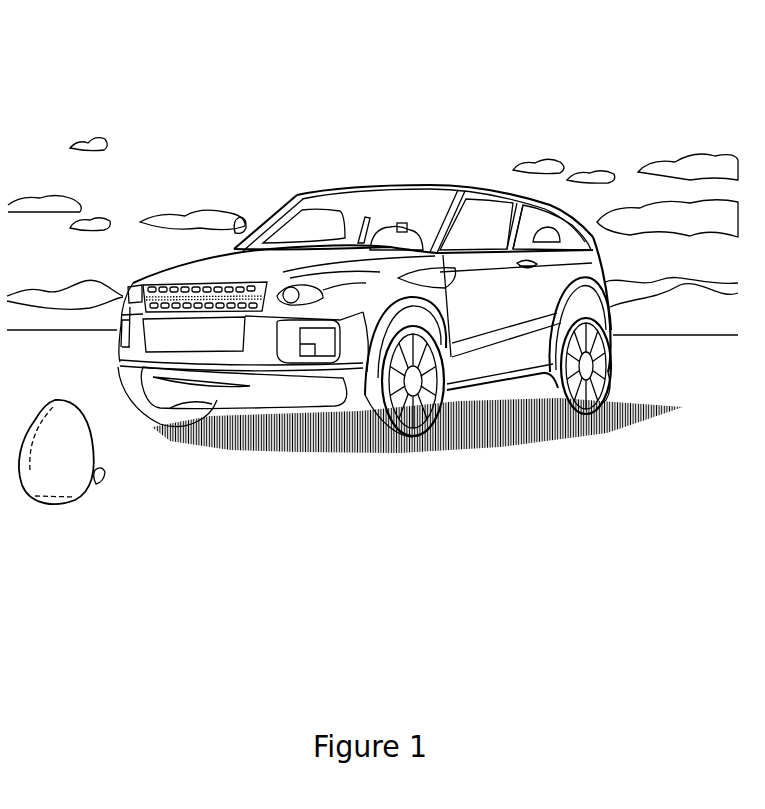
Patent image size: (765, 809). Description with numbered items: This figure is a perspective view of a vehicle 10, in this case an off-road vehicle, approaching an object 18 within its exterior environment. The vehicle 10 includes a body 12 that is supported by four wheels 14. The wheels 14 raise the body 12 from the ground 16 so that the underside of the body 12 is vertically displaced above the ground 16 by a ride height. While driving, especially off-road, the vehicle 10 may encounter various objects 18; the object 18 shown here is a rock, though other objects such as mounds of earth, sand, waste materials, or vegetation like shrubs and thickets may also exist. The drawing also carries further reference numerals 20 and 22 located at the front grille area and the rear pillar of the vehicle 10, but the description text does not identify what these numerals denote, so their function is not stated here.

The vehicle 10 is at (440, 157).
The body 12 is at (490, 343).
The wheels 14 is at (608, 372).
The ground 16 is at (223, 490).
The object 18 is at (58, 485).
The front sensor / grille 20 is at (163, 293).
The rear sensor / pillar 22 is at (578, 228).